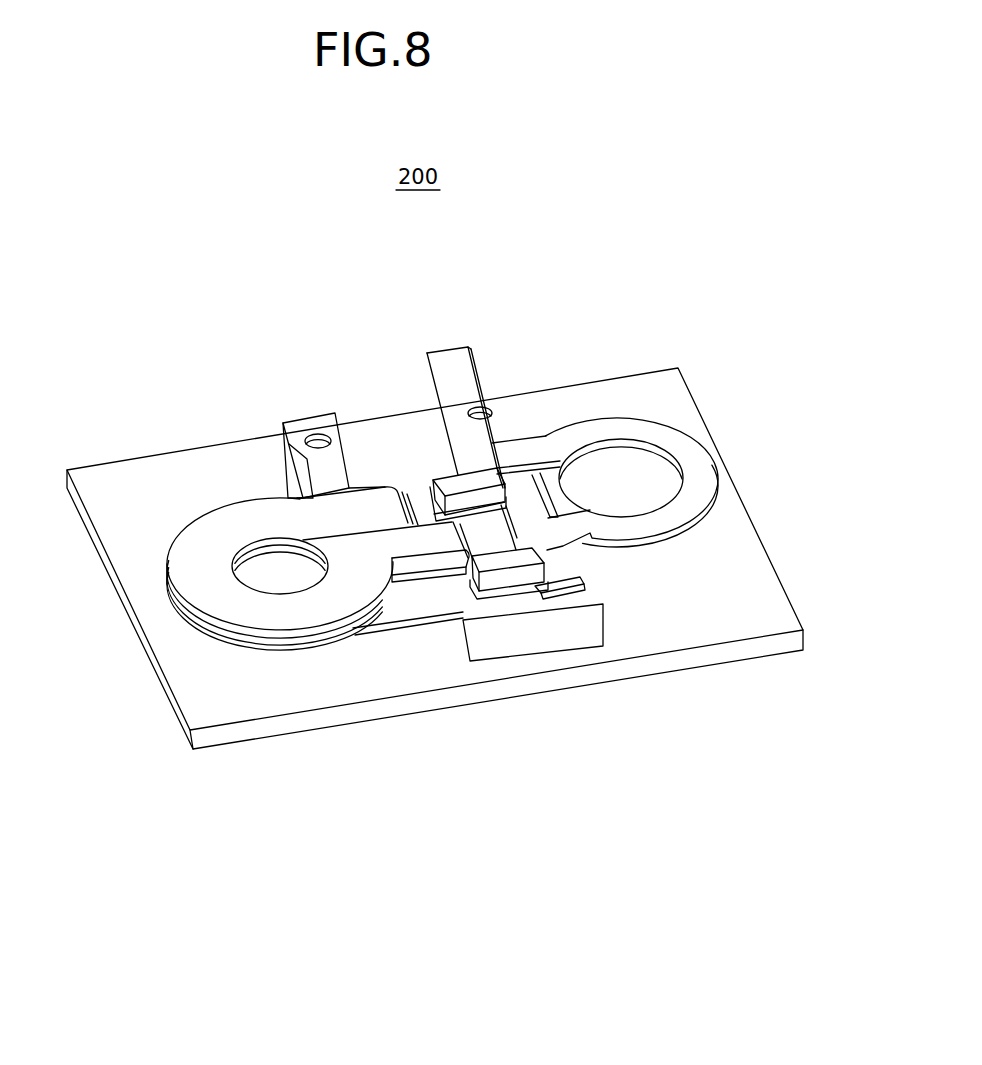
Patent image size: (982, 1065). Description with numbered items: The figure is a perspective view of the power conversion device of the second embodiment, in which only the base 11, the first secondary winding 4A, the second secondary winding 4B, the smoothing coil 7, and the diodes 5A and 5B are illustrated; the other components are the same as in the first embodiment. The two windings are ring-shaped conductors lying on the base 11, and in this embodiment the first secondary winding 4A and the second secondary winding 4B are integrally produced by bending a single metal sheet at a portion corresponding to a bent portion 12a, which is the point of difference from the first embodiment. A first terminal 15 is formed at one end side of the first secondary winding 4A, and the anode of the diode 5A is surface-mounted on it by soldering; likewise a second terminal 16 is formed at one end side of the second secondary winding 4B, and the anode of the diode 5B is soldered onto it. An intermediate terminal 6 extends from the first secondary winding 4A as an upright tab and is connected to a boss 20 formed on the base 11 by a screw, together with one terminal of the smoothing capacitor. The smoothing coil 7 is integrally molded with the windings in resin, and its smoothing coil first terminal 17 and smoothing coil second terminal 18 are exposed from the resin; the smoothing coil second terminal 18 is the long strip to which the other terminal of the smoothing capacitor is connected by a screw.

The base 11 is at (200, 475).
The intermediate terminal 6 is at (323, 422).
The boss 20 is at (295, 478).
The smoothing coil second terminal 18 is at (465, 373).
The diode 5B is at (465, 487).
The diode 5A is at (515, 580).
The smoothing coil 7 is at (628, 430).
The second secondary winding 4B is at (252, 615).
The first secondary winding 4A is at (327, 642).
The second terminal 16 is at (490, 529).
The smoothing coil first terminal 17 is at (572, 578).
The first terminal 15 is at (457, 597).
The bent portion 12a is at (440, 545).